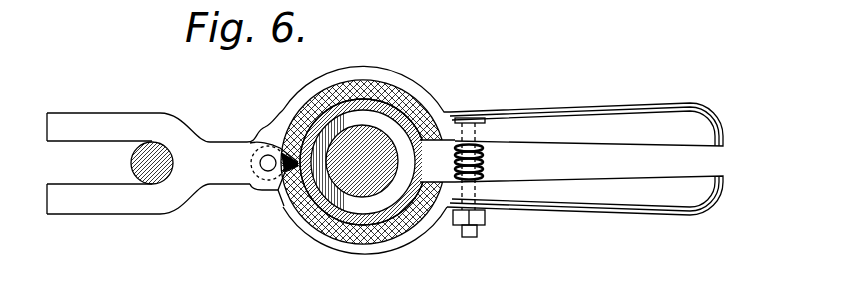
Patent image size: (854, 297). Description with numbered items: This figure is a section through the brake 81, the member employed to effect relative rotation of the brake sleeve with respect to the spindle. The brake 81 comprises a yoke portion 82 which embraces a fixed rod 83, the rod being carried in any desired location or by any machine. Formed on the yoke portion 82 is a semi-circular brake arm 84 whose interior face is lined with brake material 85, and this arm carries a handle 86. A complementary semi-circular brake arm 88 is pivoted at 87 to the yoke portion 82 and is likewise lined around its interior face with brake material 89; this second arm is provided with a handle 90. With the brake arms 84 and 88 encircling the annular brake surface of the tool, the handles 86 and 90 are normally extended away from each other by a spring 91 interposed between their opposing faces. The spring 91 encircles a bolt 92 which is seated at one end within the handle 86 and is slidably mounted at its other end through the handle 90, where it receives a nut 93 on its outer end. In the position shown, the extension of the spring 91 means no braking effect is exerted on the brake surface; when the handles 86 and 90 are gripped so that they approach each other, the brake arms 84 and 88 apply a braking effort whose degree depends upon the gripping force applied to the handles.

The brake 81 is at (457, 103).
The yoke portion 82 is at (172, 123).
The fixed rod 83 is at (157, 175).
The semi-circular brake arm 84 is at (360, 67).
The brake material 85 is at (382, 102).
The handle 86 is at (593, 103).
The pivot 87 is at (267, 163).
The complementary semi-circular brake arm 88 is at (332, 247).
The brake material 89 is at (363, 240).
The handle 90 is at (678, 203).
The spring 91 is at (483, 150).
The bolt 92 is at (483, 172).
The nut 93 is at (483, 218).